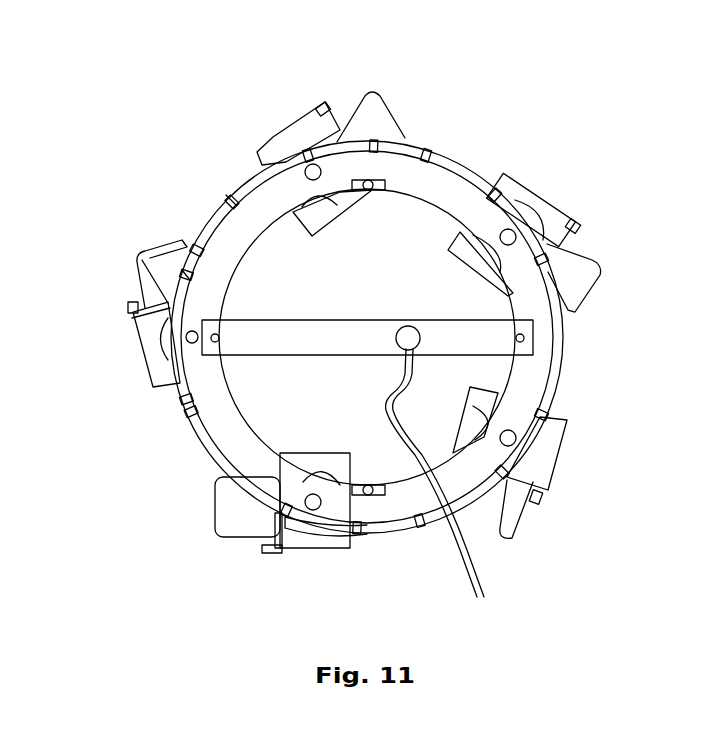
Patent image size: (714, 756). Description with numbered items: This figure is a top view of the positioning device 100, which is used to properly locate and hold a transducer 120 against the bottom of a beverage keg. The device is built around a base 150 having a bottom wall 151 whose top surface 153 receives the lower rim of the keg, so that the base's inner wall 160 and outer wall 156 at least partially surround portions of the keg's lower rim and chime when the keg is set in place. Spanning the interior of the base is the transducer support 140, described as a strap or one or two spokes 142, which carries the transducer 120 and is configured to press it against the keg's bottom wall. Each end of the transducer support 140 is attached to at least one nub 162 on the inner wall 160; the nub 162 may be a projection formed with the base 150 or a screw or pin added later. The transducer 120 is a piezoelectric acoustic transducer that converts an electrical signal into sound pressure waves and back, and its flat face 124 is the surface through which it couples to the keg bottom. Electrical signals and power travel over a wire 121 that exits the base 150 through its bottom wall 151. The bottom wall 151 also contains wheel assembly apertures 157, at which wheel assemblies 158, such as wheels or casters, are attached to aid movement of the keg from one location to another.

The positioning device 100 is at (138, 110).
The transducer 120 is at (410, 328).
The wire 121 is at (466, 565).
The face 124 is at (417, 328).
The transducer support 140 is at (360, 336).
The spoke 142 is at (470, 334).
The base 150 is at (210, 216).
The bottom wall 151 is at (222, 246).
The top surface 153 is at (208, 278).
The outer wall 156 is at (167, 395).
The wheel assembly aperture 157 is at (310, 166).
The wheel assembly 158 is at (318, 105).
The inner wall 160 is at (376, 181).
The nub 162 is at (363, 180).